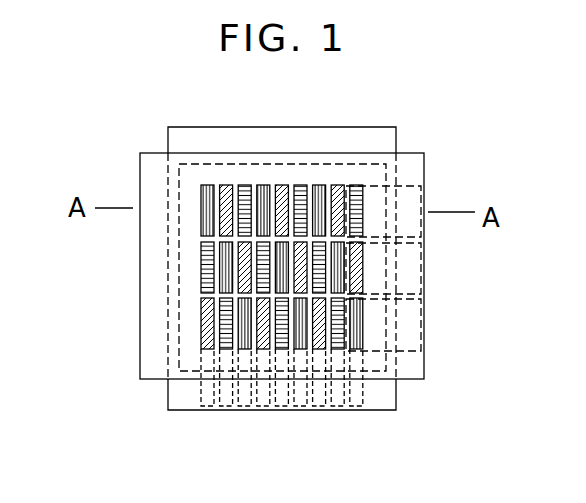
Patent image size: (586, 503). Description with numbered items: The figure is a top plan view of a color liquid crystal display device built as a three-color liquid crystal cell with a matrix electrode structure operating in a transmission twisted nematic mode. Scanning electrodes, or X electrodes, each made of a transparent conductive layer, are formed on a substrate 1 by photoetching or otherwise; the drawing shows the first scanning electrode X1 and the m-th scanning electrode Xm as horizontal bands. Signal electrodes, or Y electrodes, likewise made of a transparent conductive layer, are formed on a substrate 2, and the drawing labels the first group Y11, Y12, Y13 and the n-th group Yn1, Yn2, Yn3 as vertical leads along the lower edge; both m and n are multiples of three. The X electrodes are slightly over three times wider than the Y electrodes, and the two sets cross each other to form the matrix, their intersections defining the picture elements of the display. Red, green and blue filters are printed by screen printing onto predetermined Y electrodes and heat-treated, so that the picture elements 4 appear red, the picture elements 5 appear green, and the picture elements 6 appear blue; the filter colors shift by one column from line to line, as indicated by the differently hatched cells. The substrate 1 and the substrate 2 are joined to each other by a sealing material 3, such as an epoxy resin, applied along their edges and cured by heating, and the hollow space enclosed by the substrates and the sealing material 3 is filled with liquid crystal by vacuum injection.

The substrate 1 is at (415, 355).
The substrate 2 is at (388, 402).
The sealing material 3 is at (388, 372).
The picture elements 4 is at (320, 185).
The picture elements 5 is at (338, 185).
The picture elements 6 is at (358, 185).
The scanning electrode X1 is at (415, 202).
The scanning electrode Xm is at (412, 317).
The signal electrode Y11 is at (207, 410).
The signal electrode Y12 is at (229, 410).
The signal electrode Y13 is at (247, 410).
The signal electrode Yn1 is at (324, 410).
The signal electrode Yn2 is at (337, 410).
The signal electrode Yn3 is at (357, 410).